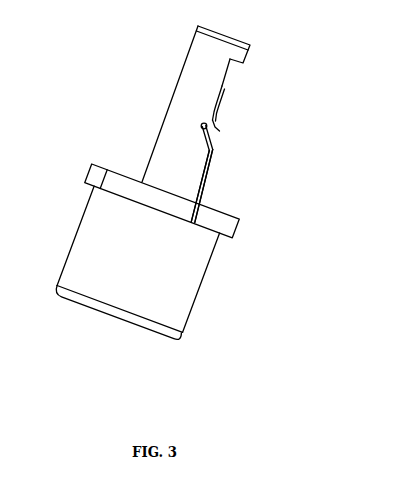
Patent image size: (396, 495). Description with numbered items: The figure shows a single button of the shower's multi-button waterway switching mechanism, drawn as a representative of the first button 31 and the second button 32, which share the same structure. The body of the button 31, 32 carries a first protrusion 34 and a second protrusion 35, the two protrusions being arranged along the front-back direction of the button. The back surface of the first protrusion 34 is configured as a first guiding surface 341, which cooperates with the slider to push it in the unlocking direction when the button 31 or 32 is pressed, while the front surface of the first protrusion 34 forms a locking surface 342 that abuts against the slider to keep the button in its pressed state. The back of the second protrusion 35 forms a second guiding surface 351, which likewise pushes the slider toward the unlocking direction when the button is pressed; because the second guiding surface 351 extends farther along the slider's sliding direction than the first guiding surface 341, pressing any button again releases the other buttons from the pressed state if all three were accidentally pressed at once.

The first protrusion 34 is at (212, 120).
The first guiding surface 341 is at (218, 121).
The locking surface 342 is at (203, 126).
The second protrusion 35 is at (206, 148).
The second guiding surface 351 is at (214, 149).
The first button 31 is at (183, 277).
The second button 32 is at (183, 277).